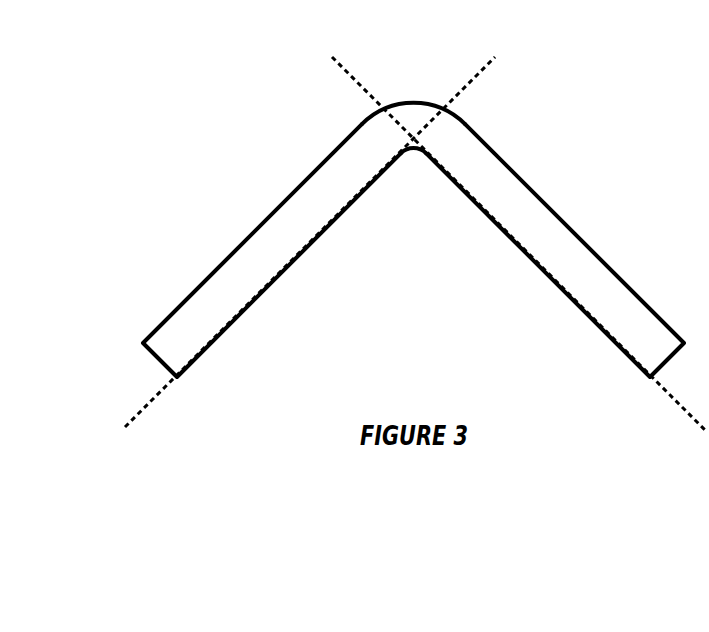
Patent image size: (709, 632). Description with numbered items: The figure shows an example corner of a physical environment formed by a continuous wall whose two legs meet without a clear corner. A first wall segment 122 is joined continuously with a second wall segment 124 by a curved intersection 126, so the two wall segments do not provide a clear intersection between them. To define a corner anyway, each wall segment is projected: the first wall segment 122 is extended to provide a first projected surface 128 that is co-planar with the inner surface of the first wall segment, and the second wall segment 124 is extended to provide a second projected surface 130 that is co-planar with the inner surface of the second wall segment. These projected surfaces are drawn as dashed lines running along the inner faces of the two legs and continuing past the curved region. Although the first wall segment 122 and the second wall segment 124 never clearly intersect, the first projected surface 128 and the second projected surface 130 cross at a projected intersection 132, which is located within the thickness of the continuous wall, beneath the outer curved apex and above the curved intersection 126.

The first wall segment 122 is at (302, 254).
The second wall segment 124 is at (517, 245).
The curved intersection 126 is at (415, 151).
The first projected surface 128 is at (363, 87).
The second projected surface 130 is at (475, 78).
The projected intersection 132 is at (416, 140).